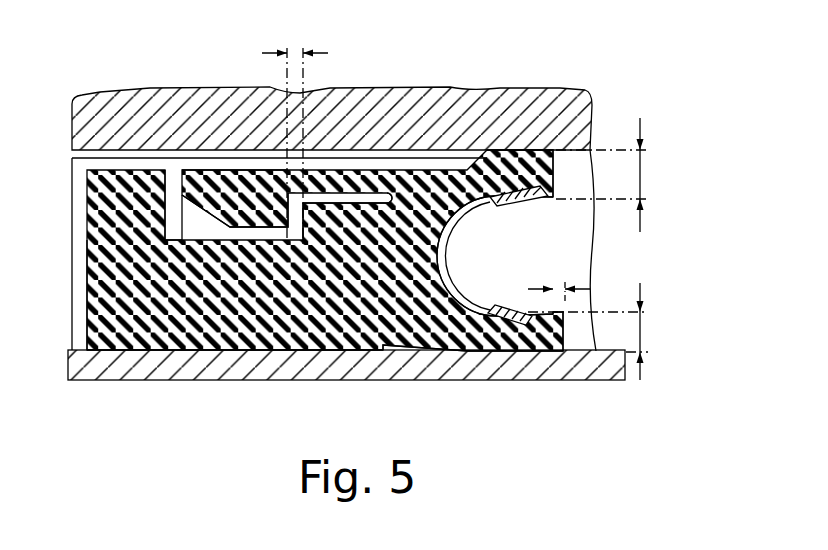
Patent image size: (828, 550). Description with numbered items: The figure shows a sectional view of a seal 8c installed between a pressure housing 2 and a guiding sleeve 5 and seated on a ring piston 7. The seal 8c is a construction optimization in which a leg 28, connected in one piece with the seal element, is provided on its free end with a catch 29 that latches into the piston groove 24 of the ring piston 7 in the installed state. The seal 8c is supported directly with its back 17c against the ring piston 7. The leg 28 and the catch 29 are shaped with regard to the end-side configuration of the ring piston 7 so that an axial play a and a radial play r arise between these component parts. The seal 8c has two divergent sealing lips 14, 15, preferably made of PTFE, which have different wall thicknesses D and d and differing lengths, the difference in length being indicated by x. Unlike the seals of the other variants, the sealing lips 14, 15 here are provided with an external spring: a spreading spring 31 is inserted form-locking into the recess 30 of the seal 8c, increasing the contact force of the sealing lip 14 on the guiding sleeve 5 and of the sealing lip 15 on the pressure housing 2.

The pressure housing 2 is at (190, 107).
The guiding sleeve 5 is at (173, 368).
The ring piston 7 is at (247, 337).
The seal 8c is at (453, 190).
The sealing lip 14 is at (550, 340).
The sealing lip 15 is at (538, 167).
The back of the seal 17c is at (413, 330).
The piston groove 24 is at (170, 182).
The leg 28 is at (335, 237).
The catch 29 is at (208, 197).
The recess 30 is at (508, 260).
The spreading spring 31 is at (532, 197).
The axial play a is at (293, 48).
The wall thickness D is at (648, 176).
The wall thickness d is at (646, 338).
The radial play r is at (370, 178).
The difference in length x is at (560, 286).